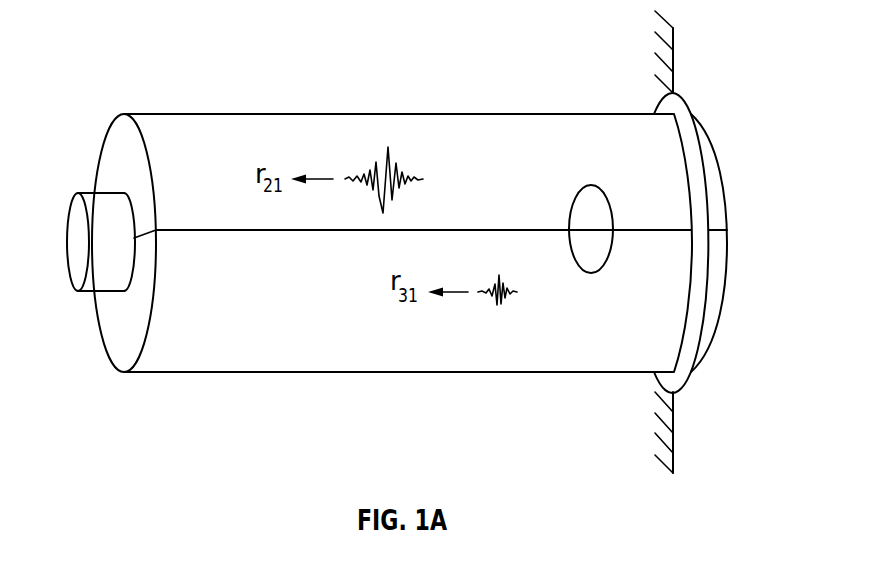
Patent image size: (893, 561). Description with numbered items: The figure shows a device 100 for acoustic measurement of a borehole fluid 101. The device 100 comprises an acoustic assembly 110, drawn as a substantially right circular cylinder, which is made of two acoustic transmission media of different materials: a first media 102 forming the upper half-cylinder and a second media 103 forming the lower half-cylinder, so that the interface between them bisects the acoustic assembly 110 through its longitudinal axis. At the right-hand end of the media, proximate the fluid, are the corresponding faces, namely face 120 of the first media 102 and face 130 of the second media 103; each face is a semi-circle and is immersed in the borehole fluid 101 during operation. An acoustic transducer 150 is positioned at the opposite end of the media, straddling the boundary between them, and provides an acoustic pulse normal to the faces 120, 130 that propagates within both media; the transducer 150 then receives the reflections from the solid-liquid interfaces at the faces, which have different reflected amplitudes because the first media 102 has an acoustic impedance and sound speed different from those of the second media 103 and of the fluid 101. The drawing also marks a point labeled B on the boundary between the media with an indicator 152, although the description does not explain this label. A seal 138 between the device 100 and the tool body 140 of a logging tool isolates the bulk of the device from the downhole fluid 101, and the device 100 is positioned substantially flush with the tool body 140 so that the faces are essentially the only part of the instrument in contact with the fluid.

The device 100 is at (116, 36).
The borehole fluid 101 is at (780, 246).
The first media 102 is at (98, 158).
The second media 103 is at (98, 318).
The acoustic assembly 110 is at (200, 412).
The corresponding face of first media 120 is at (721, 174).
The corresponding face of second media 130 is at (726, 290).
The seal 138 is at (674, 103).
The tool body 140 is at (674, 62).
The acoustic transducer 150 is at (80, 266).
The interface point B 152 is at (590, 194).